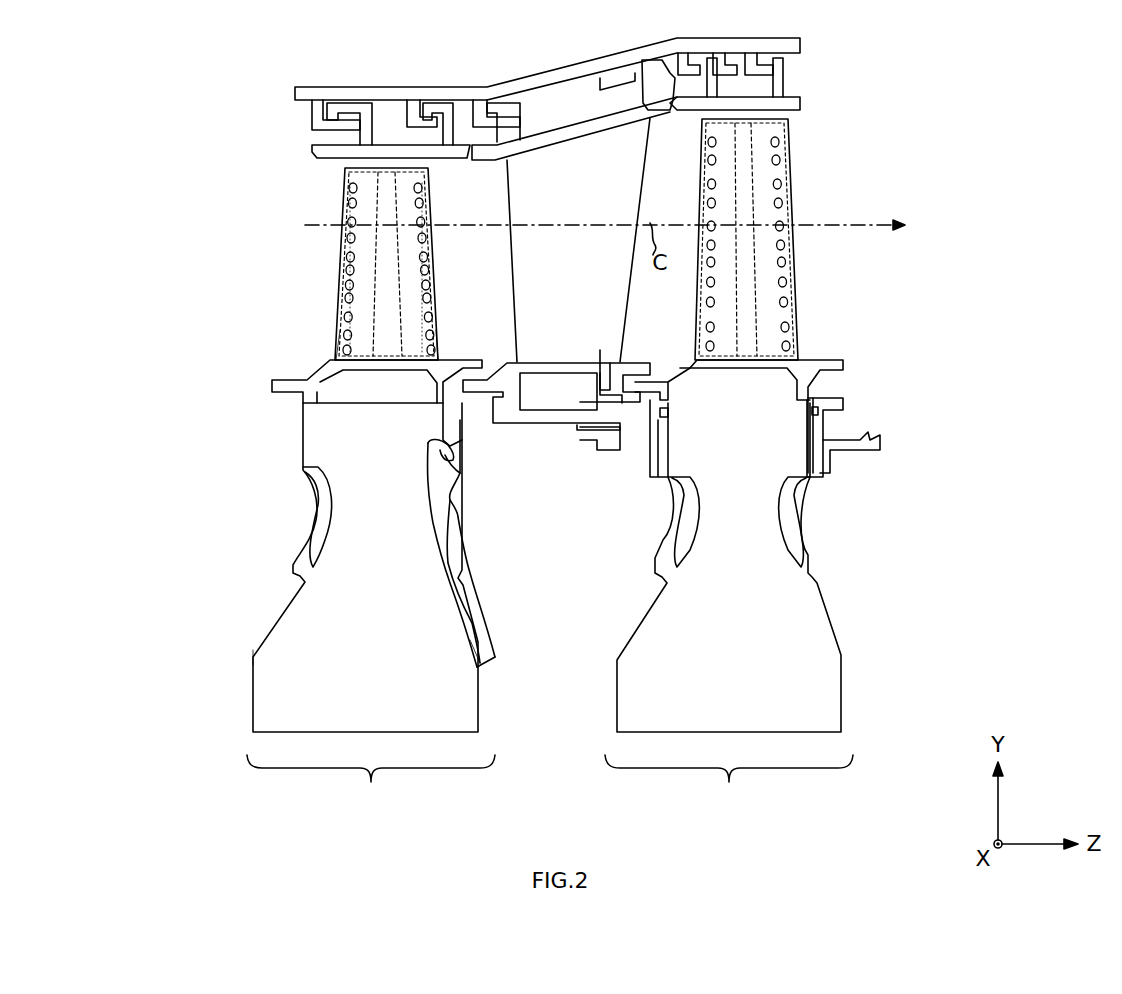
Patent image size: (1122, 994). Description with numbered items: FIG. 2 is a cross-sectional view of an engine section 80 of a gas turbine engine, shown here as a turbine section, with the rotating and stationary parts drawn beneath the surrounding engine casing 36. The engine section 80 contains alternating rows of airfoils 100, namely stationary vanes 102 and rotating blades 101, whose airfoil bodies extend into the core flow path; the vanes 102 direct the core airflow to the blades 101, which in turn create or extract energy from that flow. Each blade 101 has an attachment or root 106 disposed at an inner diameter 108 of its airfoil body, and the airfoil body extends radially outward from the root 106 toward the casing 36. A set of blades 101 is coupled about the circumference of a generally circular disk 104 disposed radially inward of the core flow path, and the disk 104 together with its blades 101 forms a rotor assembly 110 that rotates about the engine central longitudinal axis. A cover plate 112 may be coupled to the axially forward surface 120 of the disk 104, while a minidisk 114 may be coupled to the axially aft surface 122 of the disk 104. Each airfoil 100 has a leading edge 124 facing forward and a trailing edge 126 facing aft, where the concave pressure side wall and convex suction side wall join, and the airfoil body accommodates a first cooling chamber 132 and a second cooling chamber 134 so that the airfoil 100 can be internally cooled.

The engine section 80 is at (130, 92).
The engine casing 36 is at (348, 92).
The airfoil 100 is at (557, 252).
The blade 101 is at (312, 180).
The vane 102 is at (577, 157).
The first cooling chamber 132 is at (367, 265).
The second cooling chamber 134 is at (410, 305).
The leading edge 124 is at (337, 332).
The trailing edge 126 is at (438, 327).
The root 106 is at (317, 377).
The inner diameter 108 is at (380, 362).
The disk 104 is at (547, 567).
The cover plate 112 is at (315, 503).
The minidisk 114 is at (453, 498).
The axially forward surface 120 is at (262, 647).
The axially aft surface 122 is at (473, 638).
The rotor assembly 110 is at (550, 784).